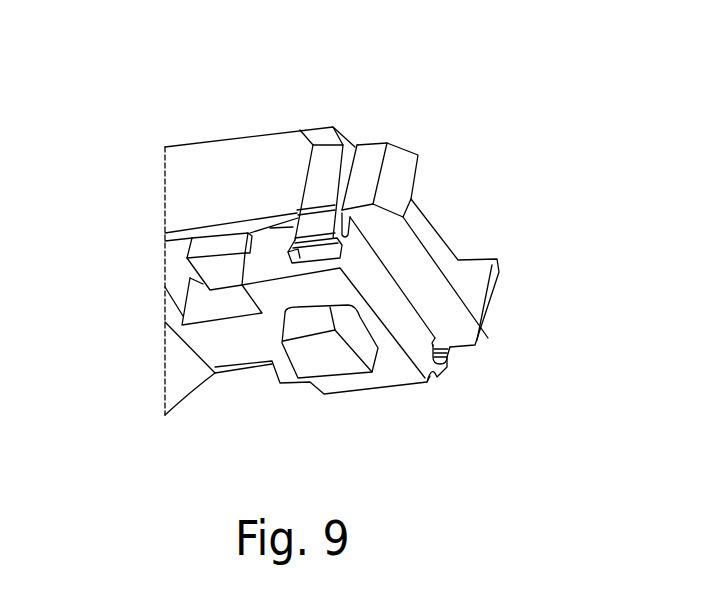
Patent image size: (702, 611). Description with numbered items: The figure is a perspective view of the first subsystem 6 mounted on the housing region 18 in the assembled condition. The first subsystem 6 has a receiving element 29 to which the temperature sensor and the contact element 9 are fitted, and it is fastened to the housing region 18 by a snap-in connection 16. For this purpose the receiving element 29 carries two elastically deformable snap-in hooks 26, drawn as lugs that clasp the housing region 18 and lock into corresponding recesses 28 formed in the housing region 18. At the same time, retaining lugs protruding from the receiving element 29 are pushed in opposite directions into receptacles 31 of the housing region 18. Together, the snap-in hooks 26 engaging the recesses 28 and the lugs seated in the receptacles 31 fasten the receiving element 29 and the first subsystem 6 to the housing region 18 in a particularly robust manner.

The first subsystem 6 is at (378, 399).
The contact element 9 is at (313, 362).
The snap-in connection 16 is at (375, 130).
The housing region 18 is at (248, 158).
The snap-in hook 26 is at (323, 170).
The recess 28 is at (350, 134).
The receiving element 29 is at (390, 302).
The receptacle 31 is at (222, 263).